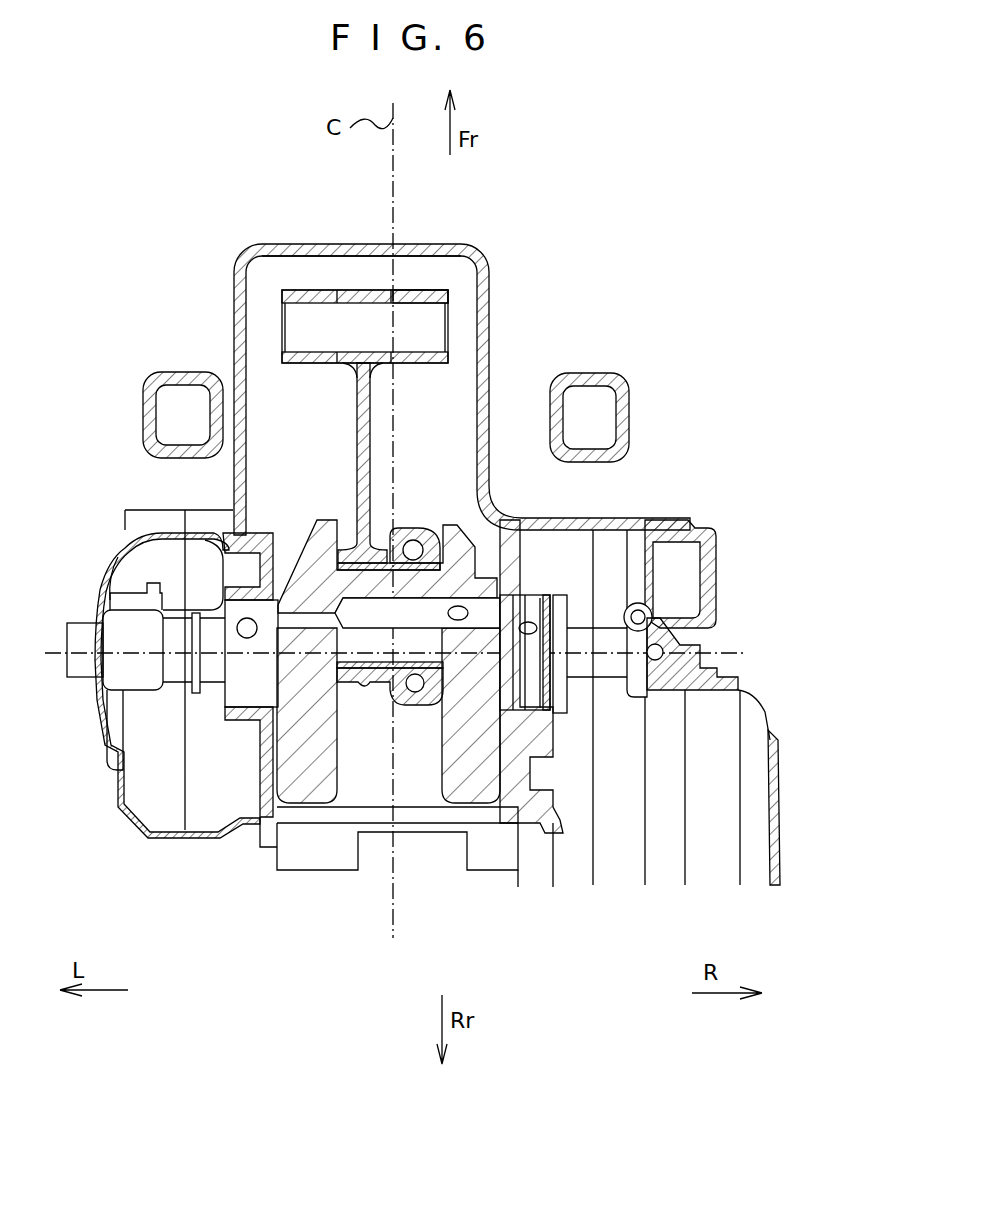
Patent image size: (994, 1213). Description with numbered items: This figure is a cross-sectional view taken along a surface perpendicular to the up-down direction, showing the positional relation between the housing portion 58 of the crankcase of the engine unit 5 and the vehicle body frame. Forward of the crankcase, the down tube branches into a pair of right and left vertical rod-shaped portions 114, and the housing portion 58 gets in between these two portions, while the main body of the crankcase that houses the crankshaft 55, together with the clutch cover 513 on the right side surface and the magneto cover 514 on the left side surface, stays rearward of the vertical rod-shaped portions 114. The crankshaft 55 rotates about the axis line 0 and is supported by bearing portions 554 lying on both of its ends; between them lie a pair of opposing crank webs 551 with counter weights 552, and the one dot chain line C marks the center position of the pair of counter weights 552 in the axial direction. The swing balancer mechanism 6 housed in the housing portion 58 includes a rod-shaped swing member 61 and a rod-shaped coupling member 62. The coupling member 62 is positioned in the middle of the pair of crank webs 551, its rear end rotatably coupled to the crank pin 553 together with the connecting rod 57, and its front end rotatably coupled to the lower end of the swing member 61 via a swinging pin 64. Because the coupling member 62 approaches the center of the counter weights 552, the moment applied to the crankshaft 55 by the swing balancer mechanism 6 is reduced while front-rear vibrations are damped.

The axis line 0 is at (405, 658).
The engine unit 5 is at (748, 594).
The swing balancer mechanism 6 is at (519, 264).
The crankshaft 55 is at (383, 655).
The connecting rod 57 is at (413, 540).
The housing portion 58 is at (353, 244).
The swing member 61 is at (433, 292).
The coupling member 62 is at (360, 428).
The swinging pin 64 is at (303, 318).
The pair of right and left vertical rod-shaped portions 114 is at (167, 370).
The clutch cover 513 is at (775, 813).
The magneto cover 514 is at (103, 697).
The crank web 551 is at (242, 526).
The counter weight 552 is at (290, 750).
The crank pin 553 is at (392, 640).
The bearing portion 554 is at (517, 610).